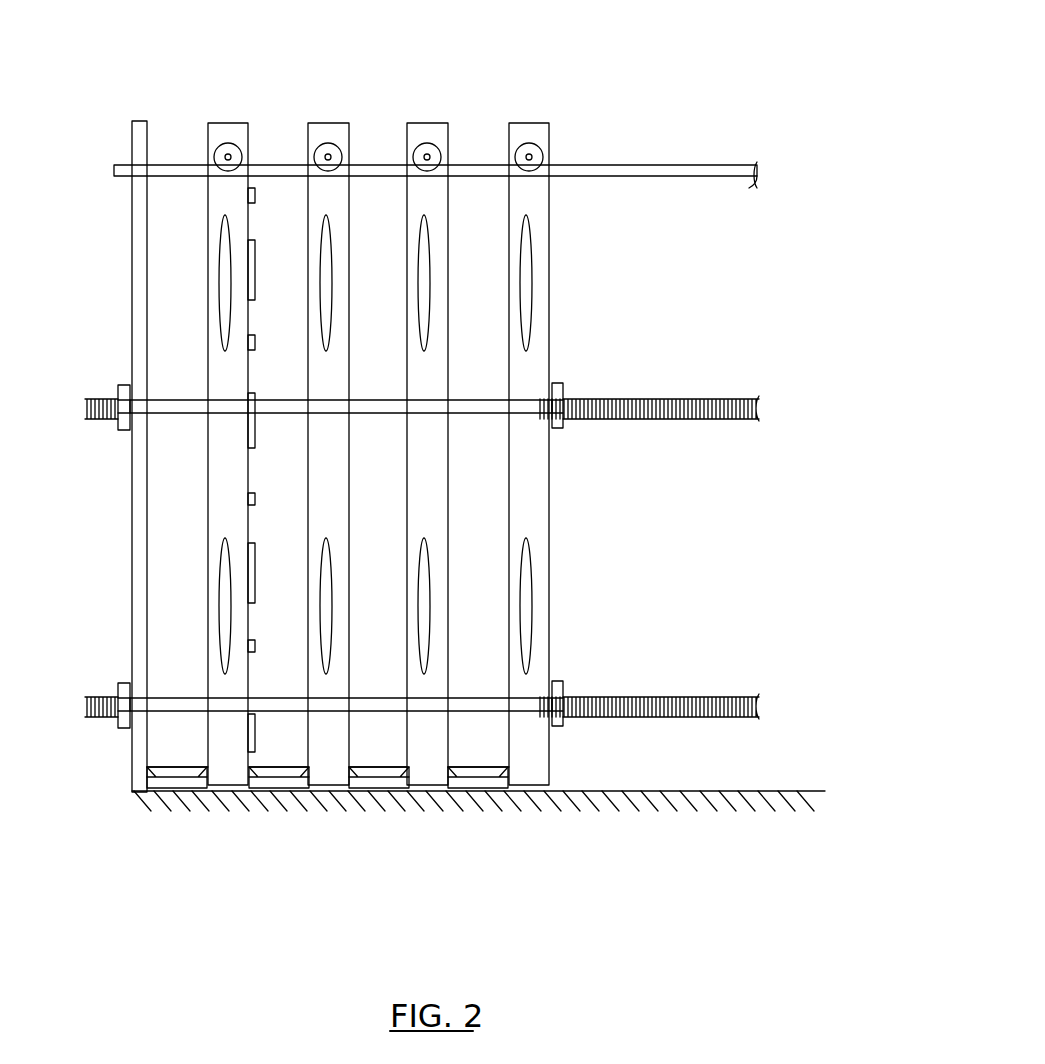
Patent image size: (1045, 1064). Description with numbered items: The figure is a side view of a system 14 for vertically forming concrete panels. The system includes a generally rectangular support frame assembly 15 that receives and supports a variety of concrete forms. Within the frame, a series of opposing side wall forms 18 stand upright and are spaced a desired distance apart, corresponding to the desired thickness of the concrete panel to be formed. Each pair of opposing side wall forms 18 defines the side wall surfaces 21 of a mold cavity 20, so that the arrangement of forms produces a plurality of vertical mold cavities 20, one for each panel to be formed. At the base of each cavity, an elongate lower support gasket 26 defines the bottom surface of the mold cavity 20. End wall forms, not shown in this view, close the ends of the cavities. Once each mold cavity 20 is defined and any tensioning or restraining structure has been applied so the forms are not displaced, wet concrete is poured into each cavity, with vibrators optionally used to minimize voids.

The system for vertically forming concrete panels 14 is at (112, 93).
The support frame assembly 15 is at (132, 244).
The side wall forms 18 is at (228, 123).
The mold cavity 20 is at (276, 208).
The side wall surfaces 21 is at (448, 280).
The lower support gasket 26 is at (157, 781).